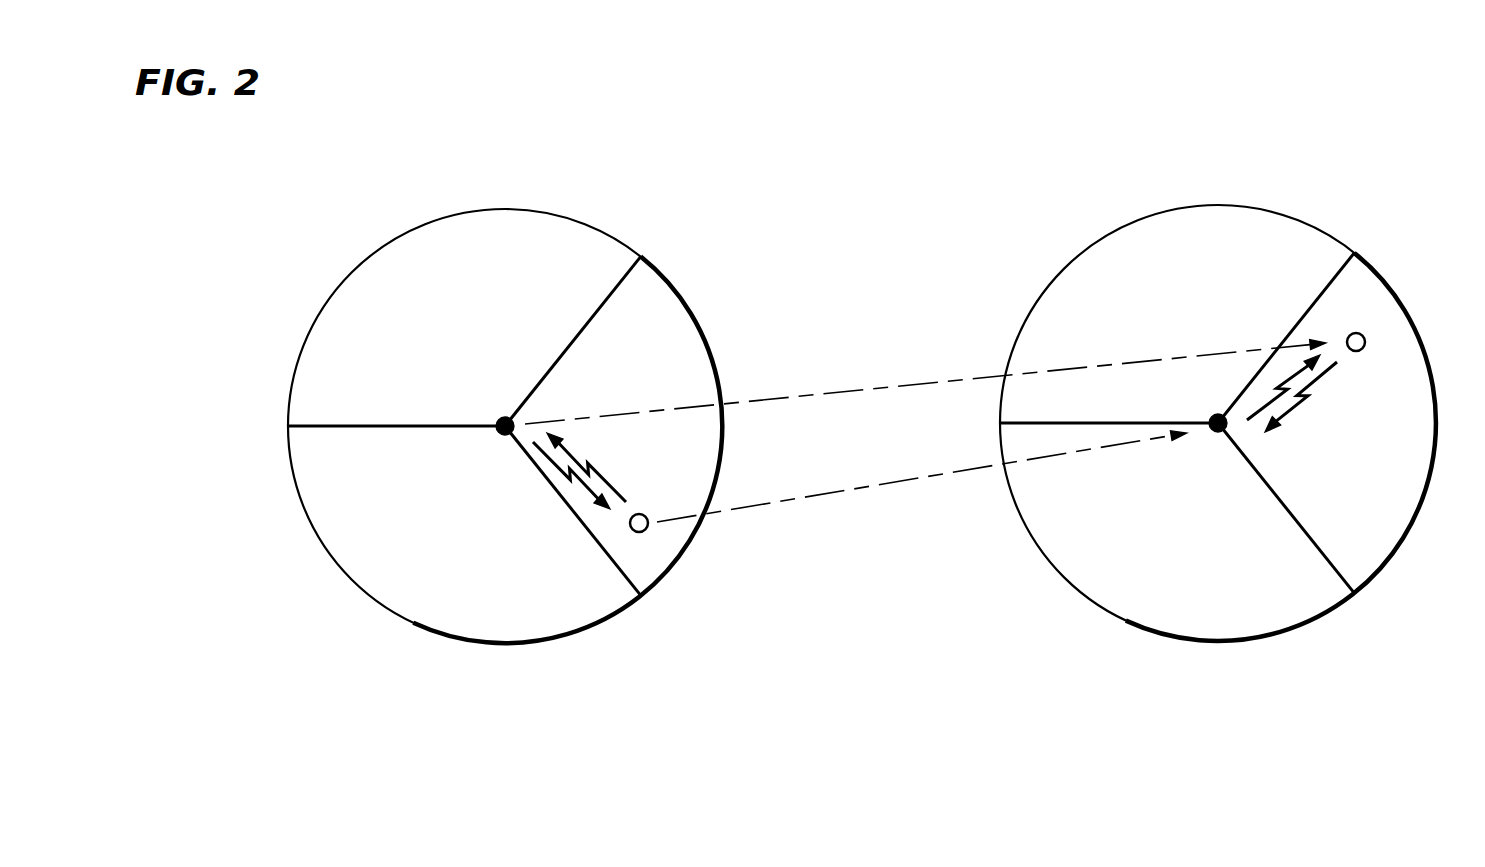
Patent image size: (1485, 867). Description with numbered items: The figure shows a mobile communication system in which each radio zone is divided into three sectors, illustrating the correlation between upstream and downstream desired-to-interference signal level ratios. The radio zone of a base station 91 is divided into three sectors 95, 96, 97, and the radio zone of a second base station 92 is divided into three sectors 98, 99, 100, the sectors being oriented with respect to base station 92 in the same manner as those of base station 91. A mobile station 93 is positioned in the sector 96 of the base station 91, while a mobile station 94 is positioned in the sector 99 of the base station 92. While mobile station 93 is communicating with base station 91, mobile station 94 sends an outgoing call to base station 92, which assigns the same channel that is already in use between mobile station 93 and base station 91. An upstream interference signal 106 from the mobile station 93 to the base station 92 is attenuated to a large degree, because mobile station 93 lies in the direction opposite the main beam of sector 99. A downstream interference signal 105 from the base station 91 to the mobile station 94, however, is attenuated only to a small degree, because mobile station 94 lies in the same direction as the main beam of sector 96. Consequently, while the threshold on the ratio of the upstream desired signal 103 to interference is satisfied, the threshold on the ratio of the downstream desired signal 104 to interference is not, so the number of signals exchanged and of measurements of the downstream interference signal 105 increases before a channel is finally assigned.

The base station 91 is at (493, 422).
The base station 92 is at (1208, 432).
The mobile station 93 is at (650, 527).
The mobile station 94 is at (1365, 338).
The sector 95 is at (418, 227).
The sector 96 is at (683, 301).
The sector 97 is at (418, 625).
The sector 98 is at (1132, 222).
The sector 99 is at (1392, 560).
The sector 100 is at (1130, 622).
The upstream desired signal 103 is at (1300, 368).
The downstream desired signal 104 is at (1310, 383).
The downstream interference signal 105 is at (867, 390).
The upstream interference signal 106 is at (855, 489).